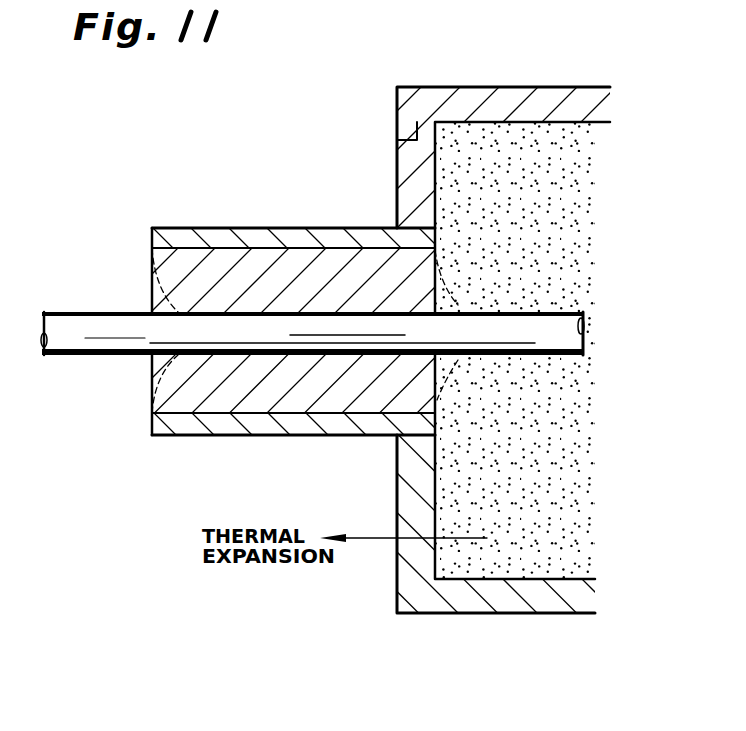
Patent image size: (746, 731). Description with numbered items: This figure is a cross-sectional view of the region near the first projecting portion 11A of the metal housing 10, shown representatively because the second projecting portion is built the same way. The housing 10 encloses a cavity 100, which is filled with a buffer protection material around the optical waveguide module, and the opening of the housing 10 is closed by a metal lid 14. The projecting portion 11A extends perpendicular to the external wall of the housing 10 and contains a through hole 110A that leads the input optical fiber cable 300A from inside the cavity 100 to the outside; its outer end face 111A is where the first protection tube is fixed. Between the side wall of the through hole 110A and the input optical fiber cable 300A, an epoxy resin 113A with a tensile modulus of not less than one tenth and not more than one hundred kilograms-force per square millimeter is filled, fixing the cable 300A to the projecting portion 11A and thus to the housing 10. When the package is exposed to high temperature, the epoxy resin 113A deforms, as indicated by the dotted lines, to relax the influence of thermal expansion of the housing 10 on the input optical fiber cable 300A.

The metal lid 14 is at (552, 98).
The metal housing 10 is at (538, 595).
The cavity 100 is at (558, 523).
The first projecting portion 11A is at (373, 365).
The through hole 110A is at (297, 420).
The epoxy resin 113A is at (200, 387).
The end face of the first projecting portion 111A is at (152, 420).
The input optical fiber cable 300A is at (92, 322).